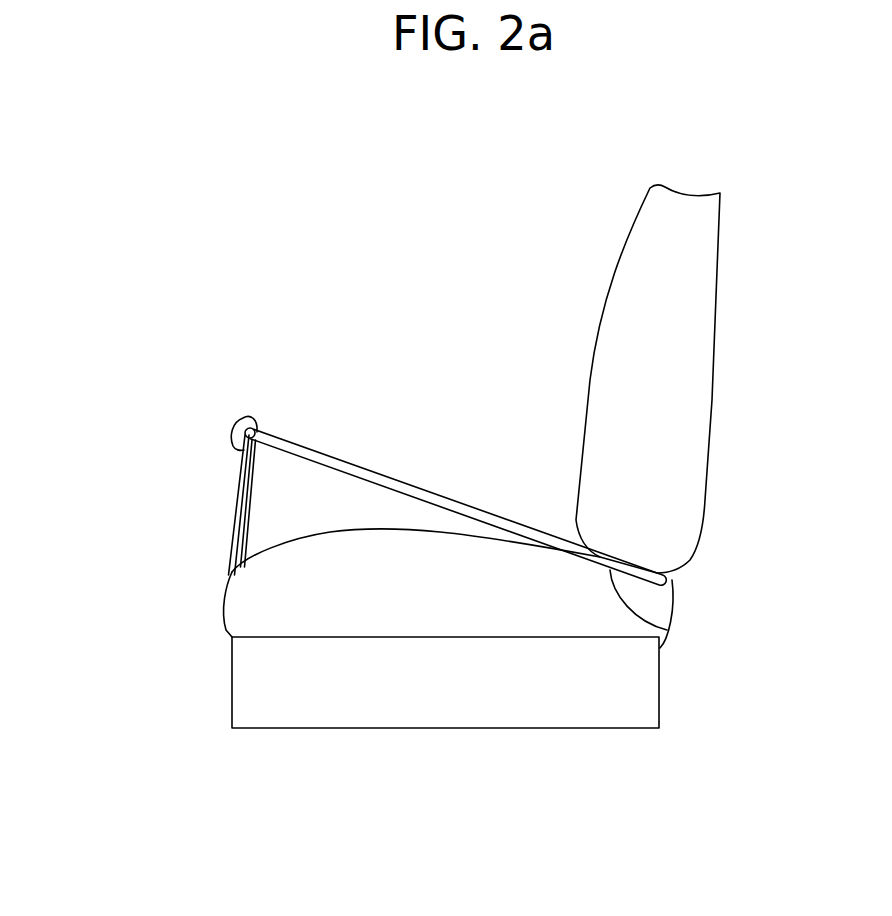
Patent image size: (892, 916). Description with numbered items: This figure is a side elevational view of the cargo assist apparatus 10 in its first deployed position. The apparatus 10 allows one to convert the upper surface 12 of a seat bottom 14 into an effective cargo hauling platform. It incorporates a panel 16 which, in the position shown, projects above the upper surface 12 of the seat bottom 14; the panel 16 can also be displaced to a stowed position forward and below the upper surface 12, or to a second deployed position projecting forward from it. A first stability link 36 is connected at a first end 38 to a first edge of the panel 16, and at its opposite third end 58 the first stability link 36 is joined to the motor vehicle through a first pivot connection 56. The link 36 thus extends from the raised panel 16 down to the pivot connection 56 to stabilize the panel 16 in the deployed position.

The cargo assist apparatus 10 is at (169, 388).
The upper surface 12 is at (324, 533).
The seat bottom 14 is at (395, 612).
The panel 16 is at (233, 510).
The first stability link 36 is at (423, 497).
The first end 38 is at (257, 430).
The first pivot connection 56 is at (672, 582).
The third end 58 is at (667, 630).